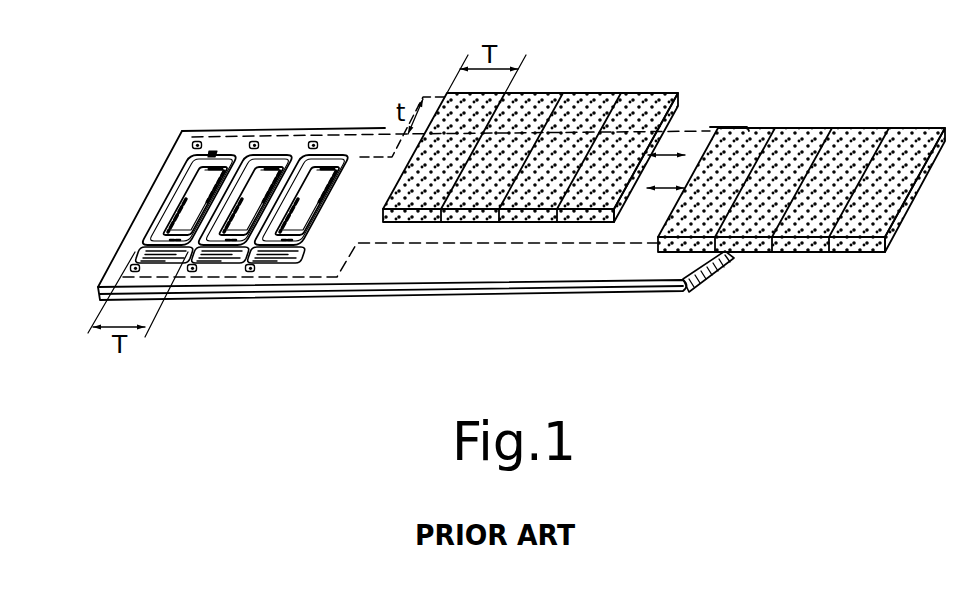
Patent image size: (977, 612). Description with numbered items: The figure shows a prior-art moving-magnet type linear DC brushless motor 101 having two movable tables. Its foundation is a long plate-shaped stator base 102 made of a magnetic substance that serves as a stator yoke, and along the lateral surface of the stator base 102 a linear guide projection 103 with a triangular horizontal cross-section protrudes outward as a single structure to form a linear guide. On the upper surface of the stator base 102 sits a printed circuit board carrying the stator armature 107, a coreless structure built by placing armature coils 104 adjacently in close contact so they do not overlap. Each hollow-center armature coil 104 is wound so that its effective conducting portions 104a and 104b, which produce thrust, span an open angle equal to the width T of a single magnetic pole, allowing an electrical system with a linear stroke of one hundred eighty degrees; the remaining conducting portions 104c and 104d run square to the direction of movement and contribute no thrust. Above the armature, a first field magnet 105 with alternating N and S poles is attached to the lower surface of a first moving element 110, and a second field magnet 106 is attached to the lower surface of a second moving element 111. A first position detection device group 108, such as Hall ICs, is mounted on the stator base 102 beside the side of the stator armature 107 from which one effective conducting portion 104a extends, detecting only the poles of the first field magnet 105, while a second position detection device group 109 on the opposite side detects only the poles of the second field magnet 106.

The linear DC brushless motor 101 is at (712, 97).
The stator base 102 is at (615, 263).
The linear guide projection 103 is at (690, 292).
The armature coil 104 is at (228, 151).
The effective conducting portion 104a is at (163, 210).
The effective conducting portion 104b is at (207, 217).
The conducting portion 104c is at (213, 152).
The conducting portion 104d is at (168, 251).
The first field magnet 105 is at (533, 110).
The second field magnet 106 is at (802, 147).
The stator armature 107 is at (342, 127).
The first position detection device group 108 is at (194, 143).
The second position detection device group 109 is at (128, 266).
The first moving element 110 is at (652, 92).
The second moving element 111 is at (865, 128).